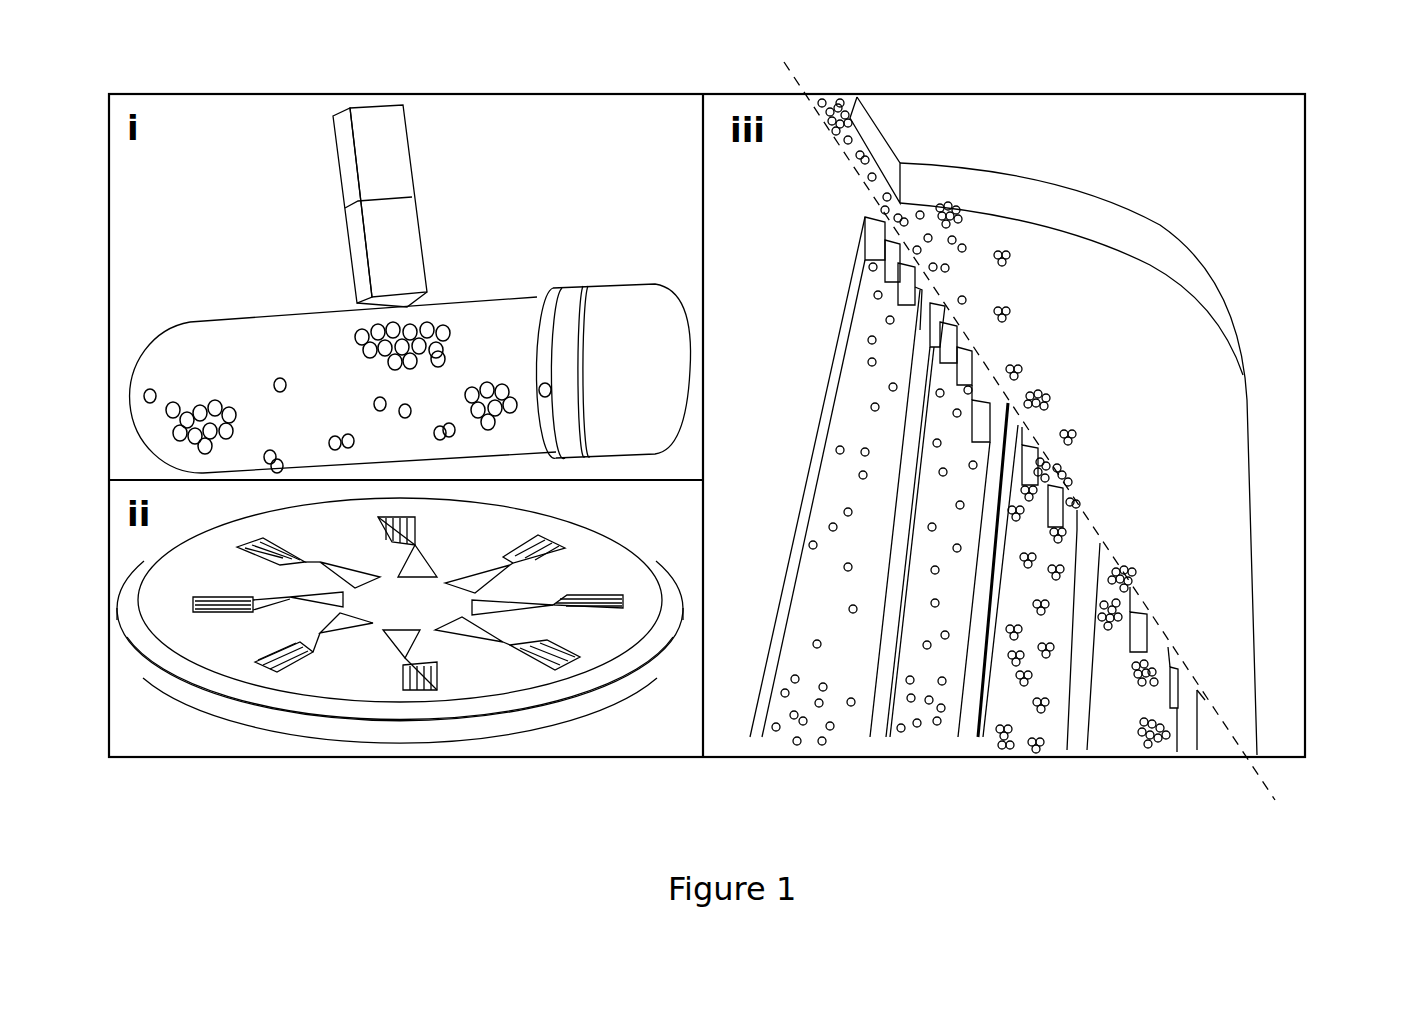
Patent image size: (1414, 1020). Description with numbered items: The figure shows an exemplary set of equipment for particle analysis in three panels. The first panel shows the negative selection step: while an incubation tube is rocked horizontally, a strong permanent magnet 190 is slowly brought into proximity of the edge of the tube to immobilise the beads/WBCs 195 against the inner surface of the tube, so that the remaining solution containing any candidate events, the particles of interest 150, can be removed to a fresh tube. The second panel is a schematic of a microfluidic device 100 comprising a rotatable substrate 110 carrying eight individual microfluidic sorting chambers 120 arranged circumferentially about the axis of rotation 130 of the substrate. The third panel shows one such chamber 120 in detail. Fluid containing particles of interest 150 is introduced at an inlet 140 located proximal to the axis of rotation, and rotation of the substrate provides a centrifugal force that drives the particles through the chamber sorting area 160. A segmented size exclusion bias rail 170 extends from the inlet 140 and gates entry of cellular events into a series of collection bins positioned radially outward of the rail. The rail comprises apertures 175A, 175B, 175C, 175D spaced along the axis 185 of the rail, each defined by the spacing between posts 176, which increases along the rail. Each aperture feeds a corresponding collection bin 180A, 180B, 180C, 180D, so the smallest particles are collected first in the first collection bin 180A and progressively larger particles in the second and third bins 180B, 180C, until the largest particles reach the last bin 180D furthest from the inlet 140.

The microfluidic device 100 is at (359, 668).
The rotatable substrate 110 is at (520, 697).
The microfluidic sorting chamber 120 is at (242, 560).
The axis of rotation 130 is at (395, 607).
The inlet 140 is at (866, 140).
The particles of interest 150 is at (325, 405).
The chamber sorting area 160 is at (1130, 345).
The bias rail 170 is at (1193, 665).
The first aperture 175A is at (930, 258).
The second aperture 175B is at (975, 348).
The third aperture 175C is at (1080, 493).
The fourth aperture 175D is at (1107, 563).
The post 176 is at (1150, 605).
The first collection bin 180A is at (820, 690).
The second collection bin 180B is at (918, 692).
The third collection bin 180C is at (1040, 699).
The fourth collection bin 180D is at (1128, 705).
The axis of the bias rail 185 is at (1278, 777).
The permanent magnet 190 is at (352, 205).
The beads/WBCs 195 is at (348, 348).